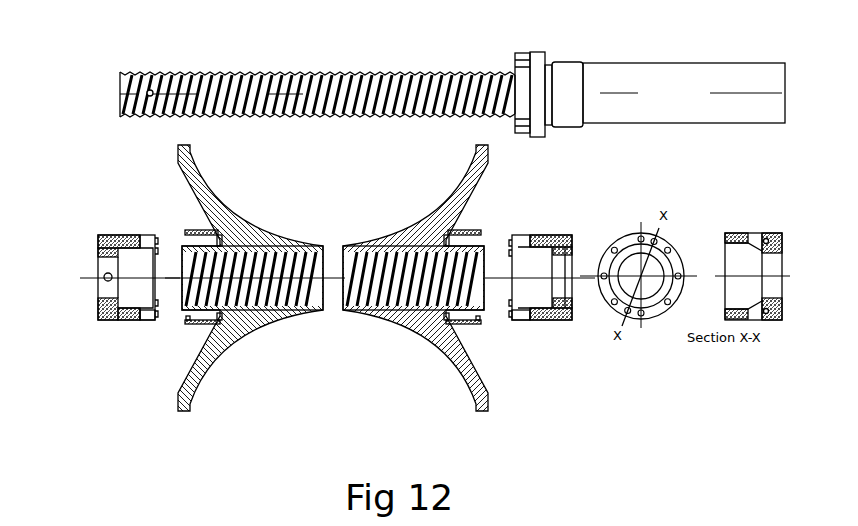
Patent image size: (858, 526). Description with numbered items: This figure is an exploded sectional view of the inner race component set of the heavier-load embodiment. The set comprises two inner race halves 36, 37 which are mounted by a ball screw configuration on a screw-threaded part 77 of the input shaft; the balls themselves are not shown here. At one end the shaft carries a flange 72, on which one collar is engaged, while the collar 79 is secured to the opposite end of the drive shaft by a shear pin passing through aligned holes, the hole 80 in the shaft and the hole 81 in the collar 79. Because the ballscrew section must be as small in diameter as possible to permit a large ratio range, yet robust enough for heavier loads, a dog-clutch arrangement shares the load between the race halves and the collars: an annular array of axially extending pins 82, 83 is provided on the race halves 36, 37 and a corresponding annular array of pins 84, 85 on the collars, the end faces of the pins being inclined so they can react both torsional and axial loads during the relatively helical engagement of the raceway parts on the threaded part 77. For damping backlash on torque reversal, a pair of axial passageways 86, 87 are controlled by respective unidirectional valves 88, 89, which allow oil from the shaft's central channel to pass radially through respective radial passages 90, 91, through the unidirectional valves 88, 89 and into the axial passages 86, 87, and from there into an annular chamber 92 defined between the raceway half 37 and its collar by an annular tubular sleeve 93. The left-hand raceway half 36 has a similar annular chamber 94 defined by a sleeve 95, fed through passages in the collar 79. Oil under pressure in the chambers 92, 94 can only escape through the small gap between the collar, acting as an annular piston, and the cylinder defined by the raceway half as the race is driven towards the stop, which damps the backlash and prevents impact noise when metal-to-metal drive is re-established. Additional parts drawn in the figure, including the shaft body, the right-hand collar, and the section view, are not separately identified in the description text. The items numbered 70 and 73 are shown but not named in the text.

The inner race half 36 is at (240, 338).
The inner race half 37 is at (460, 347).
The drive shaft 70 is at (645, 107).
The flange 72 is at (537, 60).
The right bearing housing 73 is at (556, 320).
The threaded part 77 is at (362, 90).
The collar 79 is at (122, 320).
The hole 80 is at (150, 88).
The hole 81 is at (102, 277).
The pin 82 is at (205, 232).
The pin 83 is at (467, 233).
The pin 84 is at (155, 320).
The pin 85 is at (513, 320).
The axial passageway 86 is at (740, 235).
The axial passageway 87 is at (740, 313).
The unidirectional valve 88 is at (763, 233).
The unidirectional valve 89 is at (768, 310).
The radial passage 90 is at (780, 247).
The radial passage 91 is at (782, 305).
The annular chamber 92 is at (460, 323).
The annular tubular sleeve 93 is at (472, 325).
The annular chamber 94 is at (202, 313).
The sleeve 95 is at (187, 327).